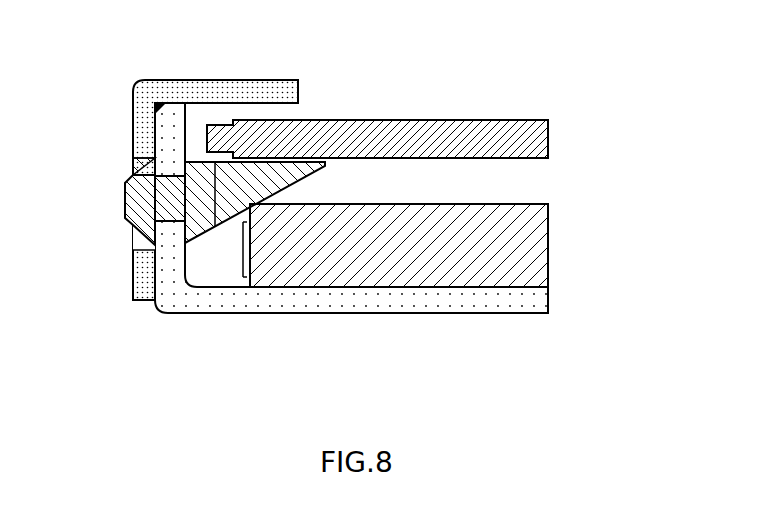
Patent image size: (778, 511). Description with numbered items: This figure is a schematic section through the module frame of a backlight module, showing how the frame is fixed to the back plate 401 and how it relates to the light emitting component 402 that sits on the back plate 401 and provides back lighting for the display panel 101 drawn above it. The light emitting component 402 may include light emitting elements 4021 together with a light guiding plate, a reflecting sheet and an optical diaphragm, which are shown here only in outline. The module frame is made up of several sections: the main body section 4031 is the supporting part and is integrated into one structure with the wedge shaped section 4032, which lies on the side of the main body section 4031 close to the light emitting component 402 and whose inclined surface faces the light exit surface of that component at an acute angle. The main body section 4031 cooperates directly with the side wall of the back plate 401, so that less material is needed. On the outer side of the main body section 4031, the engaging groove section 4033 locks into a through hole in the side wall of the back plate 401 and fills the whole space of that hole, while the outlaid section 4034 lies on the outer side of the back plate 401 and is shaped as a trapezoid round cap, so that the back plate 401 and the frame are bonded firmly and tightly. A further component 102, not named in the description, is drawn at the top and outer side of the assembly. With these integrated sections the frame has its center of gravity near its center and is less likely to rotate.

The display panel 101 is at (527, 137).
The front frame 102 is at (222, 92).
The back plate 401 is at (383, 302).
The light emitting component 402 is at (527, 252).
The light emitting elements 4021 is at (244, 252).
The main body section 4031 is at (133, 223).
The wedge shaped section 4032 is at (273, 171).
The engaging groove section 4033 is at (132, 243).
The outlaid section 4034 is at (135, 173).